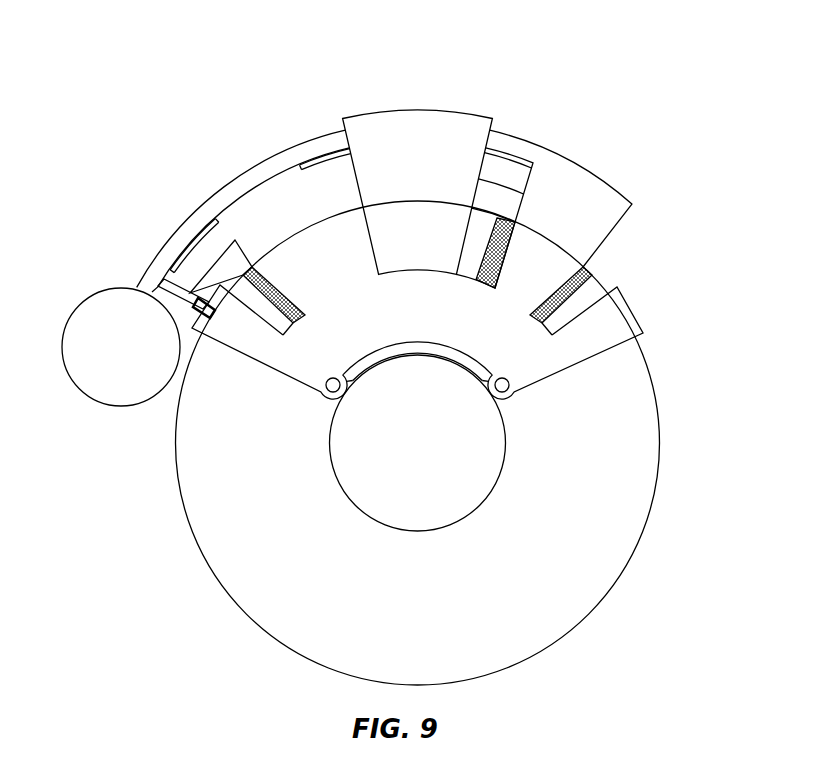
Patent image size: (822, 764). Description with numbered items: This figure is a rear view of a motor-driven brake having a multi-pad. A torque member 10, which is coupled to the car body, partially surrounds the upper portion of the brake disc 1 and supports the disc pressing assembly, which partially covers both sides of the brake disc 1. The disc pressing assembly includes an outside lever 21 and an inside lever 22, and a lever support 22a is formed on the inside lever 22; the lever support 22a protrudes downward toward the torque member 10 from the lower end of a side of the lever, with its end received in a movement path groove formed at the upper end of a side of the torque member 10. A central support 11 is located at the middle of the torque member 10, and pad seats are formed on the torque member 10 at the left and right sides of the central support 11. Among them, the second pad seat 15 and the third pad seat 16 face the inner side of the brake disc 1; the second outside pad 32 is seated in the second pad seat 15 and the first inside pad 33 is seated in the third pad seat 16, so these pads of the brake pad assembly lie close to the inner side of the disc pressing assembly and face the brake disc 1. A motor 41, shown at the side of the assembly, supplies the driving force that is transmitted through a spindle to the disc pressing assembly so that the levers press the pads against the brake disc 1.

The brake disc 1 is at (640, 415).
The torque member 10 is at (648, 320).
The central support 11 is at (412, 124).
The second pad seat 15 is at (513, 295).
The third pad seat 16 is at (322, 295).
The outside lever 21 is at (597, 190).
The inside lever 22 is at (267, 203).
The lever support 22a is at (202, 298).
The second outside pad 32 is at (495, 210).
The first inside pad 33 is at (262, 288).
The motor 41 is at (100, 307).